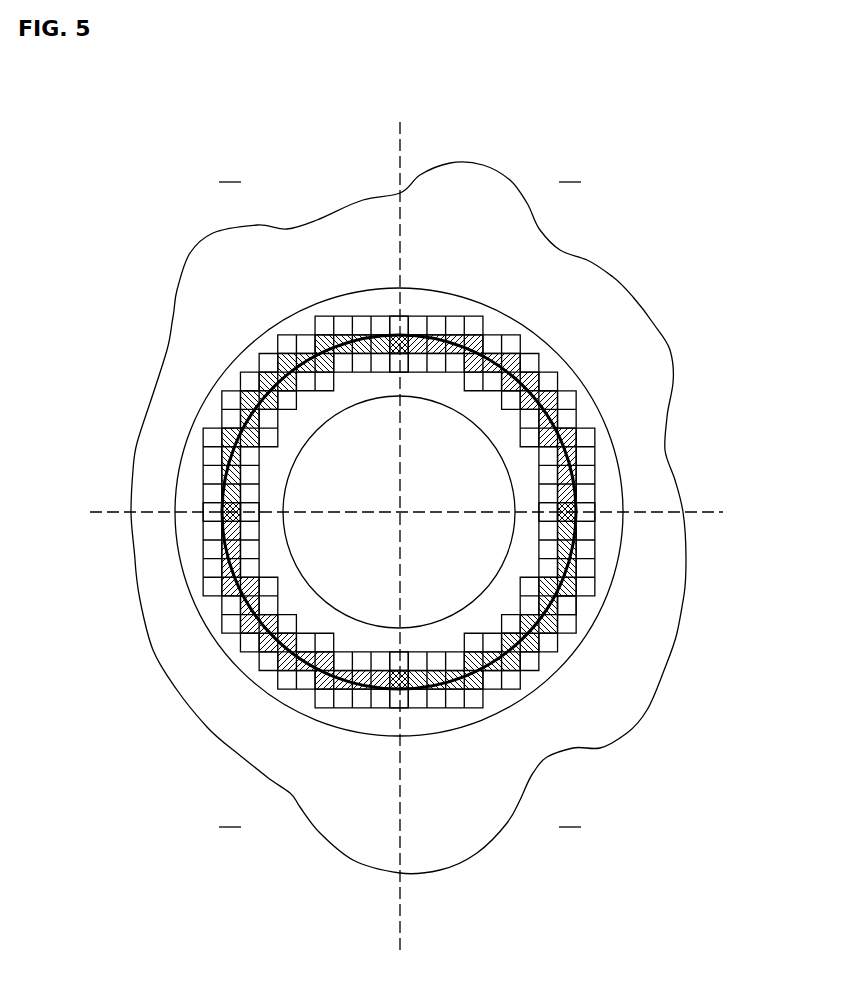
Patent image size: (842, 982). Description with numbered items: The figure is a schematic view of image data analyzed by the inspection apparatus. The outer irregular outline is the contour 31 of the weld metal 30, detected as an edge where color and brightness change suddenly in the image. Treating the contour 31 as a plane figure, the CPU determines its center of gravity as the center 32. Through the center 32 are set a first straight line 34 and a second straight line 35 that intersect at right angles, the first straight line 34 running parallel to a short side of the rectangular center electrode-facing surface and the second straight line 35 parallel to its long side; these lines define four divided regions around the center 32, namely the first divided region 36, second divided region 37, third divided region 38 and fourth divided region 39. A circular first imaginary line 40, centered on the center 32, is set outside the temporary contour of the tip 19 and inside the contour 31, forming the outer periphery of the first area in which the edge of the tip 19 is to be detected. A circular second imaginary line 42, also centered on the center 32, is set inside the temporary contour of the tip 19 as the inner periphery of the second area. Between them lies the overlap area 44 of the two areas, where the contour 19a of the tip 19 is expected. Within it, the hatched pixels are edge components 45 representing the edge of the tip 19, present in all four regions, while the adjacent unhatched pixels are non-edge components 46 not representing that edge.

The tip 19 is at (429, 512).
The contour of the tip 19a is at (557, 603).
The weld metal 30 is at (422, 518).
The contour of the weld metal 31 is at (587, 259).
The center 32 is at (400, 512).
The first straight line 34 is at (706, 510).
The second straight line 35 is at (400, 138).
The first divided region 36 is at (570, 172).
The second divided region 37 is at (230, 172).
The third divided region 38 is at (230, 817).
The fourth divided region 39 is at (570, 817).
The first imaginary line 40 is at (283, 320).
The second imaginary line 42 is at (323, 428).
The overlap area 44 is at (420, 471).
The edge components 45 is at (472, 337).
The non-edge components 46 is at (492, 342).